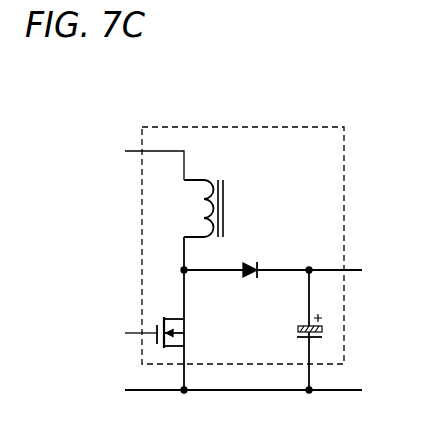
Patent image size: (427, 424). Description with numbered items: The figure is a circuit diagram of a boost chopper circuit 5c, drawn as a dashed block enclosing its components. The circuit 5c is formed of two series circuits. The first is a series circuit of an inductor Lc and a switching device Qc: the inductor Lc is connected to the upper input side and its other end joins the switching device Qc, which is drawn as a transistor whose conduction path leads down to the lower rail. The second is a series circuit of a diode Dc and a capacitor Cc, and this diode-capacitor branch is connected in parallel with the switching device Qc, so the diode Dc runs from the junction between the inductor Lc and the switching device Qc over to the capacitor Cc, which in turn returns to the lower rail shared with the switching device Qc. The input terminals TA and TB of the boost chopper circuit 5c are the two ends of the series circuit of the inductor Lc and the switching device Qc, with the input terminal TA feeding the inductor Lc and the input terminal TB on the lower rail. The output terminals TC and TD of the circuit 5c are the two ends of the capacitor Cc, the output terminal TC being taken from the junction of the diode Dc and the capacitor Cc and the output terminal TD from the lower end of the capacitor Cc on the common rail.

The boost chopper circuit 5c is at (280, 126).
The input terminal TA is at (137, 157).
The input terminal TB is at (135, 392).
The output terminal TC is at (353, 272).
The output terminal TD is at (353, 392).
The inductor Lc is at (190, 208).
The switching device Qc is at (172, 334).
The diode Dc is at (252, 286).
The capacitor Cc is at (292, 331).